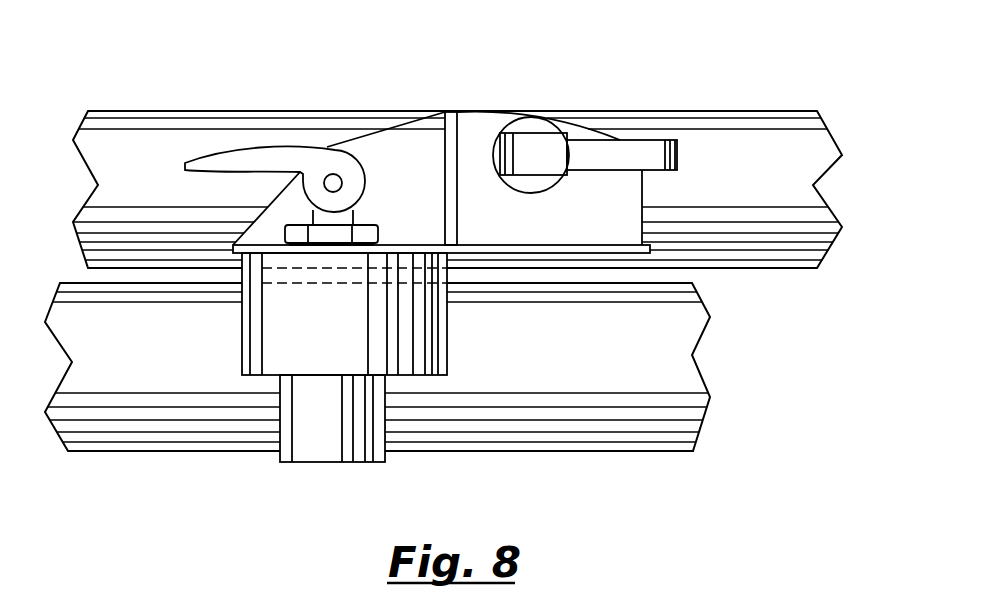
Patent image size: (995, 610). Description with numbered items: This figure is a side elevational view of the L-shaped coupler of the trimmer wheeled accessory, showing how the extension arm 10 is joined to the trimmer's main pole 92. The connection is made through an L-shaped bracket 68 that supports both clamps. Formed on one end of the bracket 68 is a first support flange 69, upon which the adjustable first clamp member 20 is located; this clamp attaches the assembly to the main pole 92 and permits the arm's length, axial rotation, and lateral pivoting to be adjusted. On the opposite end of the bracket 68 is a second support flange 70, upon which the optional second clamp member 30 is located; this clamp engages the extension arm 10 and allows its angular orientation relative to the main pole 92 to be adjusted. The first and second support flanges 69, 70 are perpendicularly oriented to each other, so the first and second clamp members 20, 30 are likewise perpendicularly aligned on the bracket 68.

The extension arm 10 is at (672, 348).
The main pole 92 is at (762, 120).
The first clamp member 20 is at (636, 128).
The second clamp member 30 is at (262, 125).
The L-shaped bracket 68 is at (421, 120).
The first support flange 69 is at (612, 206).
The second support flange 70 is at (260, 247).